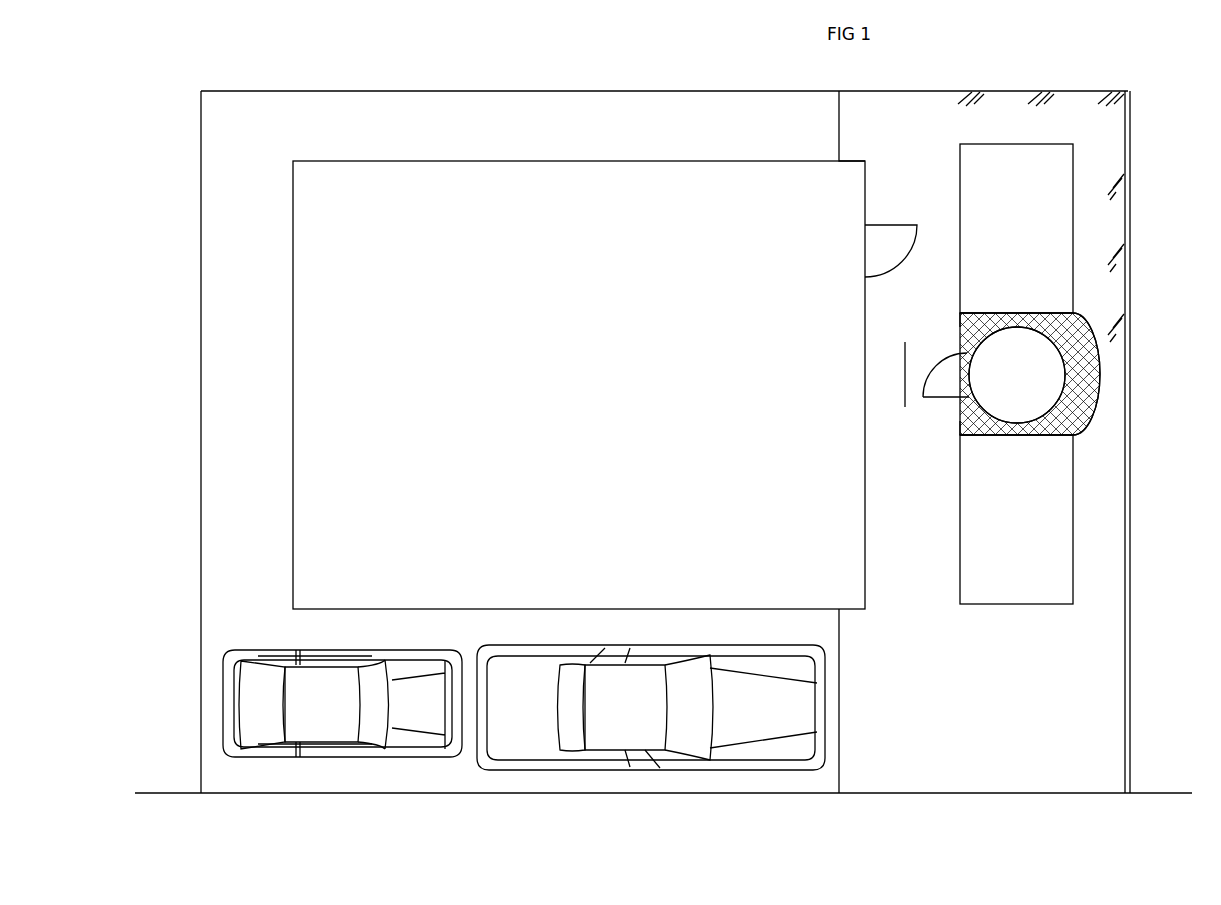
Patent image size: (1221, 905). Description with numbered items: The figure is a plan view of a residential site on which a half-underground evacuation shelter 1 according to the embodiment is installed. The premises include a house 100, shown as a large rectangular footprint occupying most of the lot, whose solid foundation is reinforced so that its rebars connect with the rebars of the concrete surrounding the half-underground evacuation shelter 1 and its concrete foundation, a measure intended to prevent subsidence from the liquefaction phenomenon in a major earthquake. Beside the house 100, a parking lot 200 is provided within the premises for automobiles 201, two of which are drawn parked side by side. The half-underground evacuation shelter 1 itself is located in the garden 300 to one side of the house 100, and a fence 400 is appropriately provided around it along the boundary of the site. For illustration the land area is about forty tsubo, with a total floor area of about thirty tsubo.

The half-underground evacuation shelter 1 is at (1082, 234).
The house 100 is at (537, 154).
The parking lot 200 is at (789, 778).
The automobiles 201 is at (341, 757).
The garden 300 is at (1023, 772).
The fence 400 is at (1131, 372).